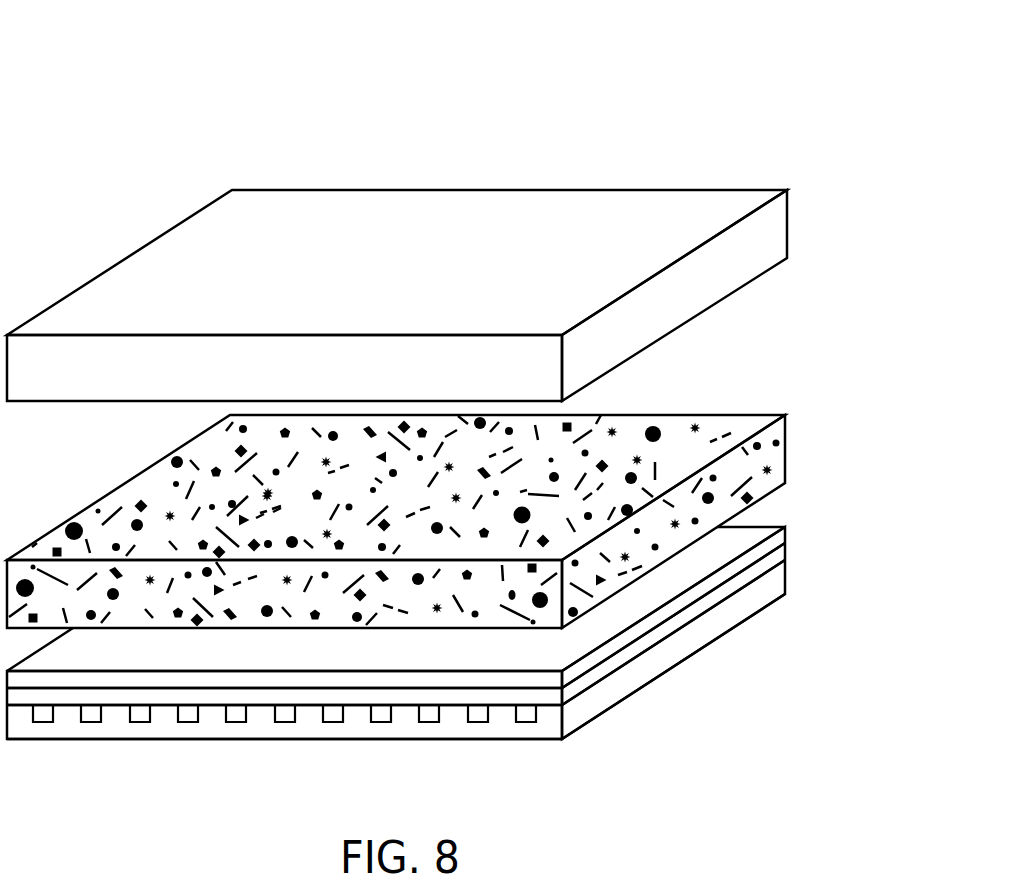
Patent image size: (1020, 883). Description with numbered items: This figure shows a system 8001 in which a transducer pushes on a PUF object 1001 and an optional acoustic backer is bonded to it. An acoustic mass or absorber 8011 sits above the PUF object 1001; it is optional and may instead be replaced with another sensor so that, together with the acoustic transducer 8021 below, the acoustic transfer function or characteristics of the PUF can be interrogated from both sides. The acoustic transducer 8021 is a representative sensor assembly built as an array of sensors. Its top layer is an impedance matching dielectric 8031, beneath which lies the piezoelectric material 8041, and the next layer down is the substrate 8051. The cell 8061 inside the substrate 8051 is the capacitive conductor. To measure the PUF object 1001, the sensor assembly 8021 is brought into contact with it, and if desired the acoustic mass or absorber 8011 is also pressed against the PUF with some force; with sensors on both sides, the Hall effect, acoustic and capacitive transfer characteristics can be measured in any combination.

The system 8001 is at (103, 84).
The acoustic mass or absorber 8011 is at (788, 218).
The PUF object 1001 is at (787, 447).
The acoustic transducer 8021 is at (834, 540).
The impedance matching dielectric 8031 is at (707, 588).
The piezoelectric material 8041 is at (676, 623).
The substrate 8051 is at (637, 682).
The cell 8061 is at (525, 713).